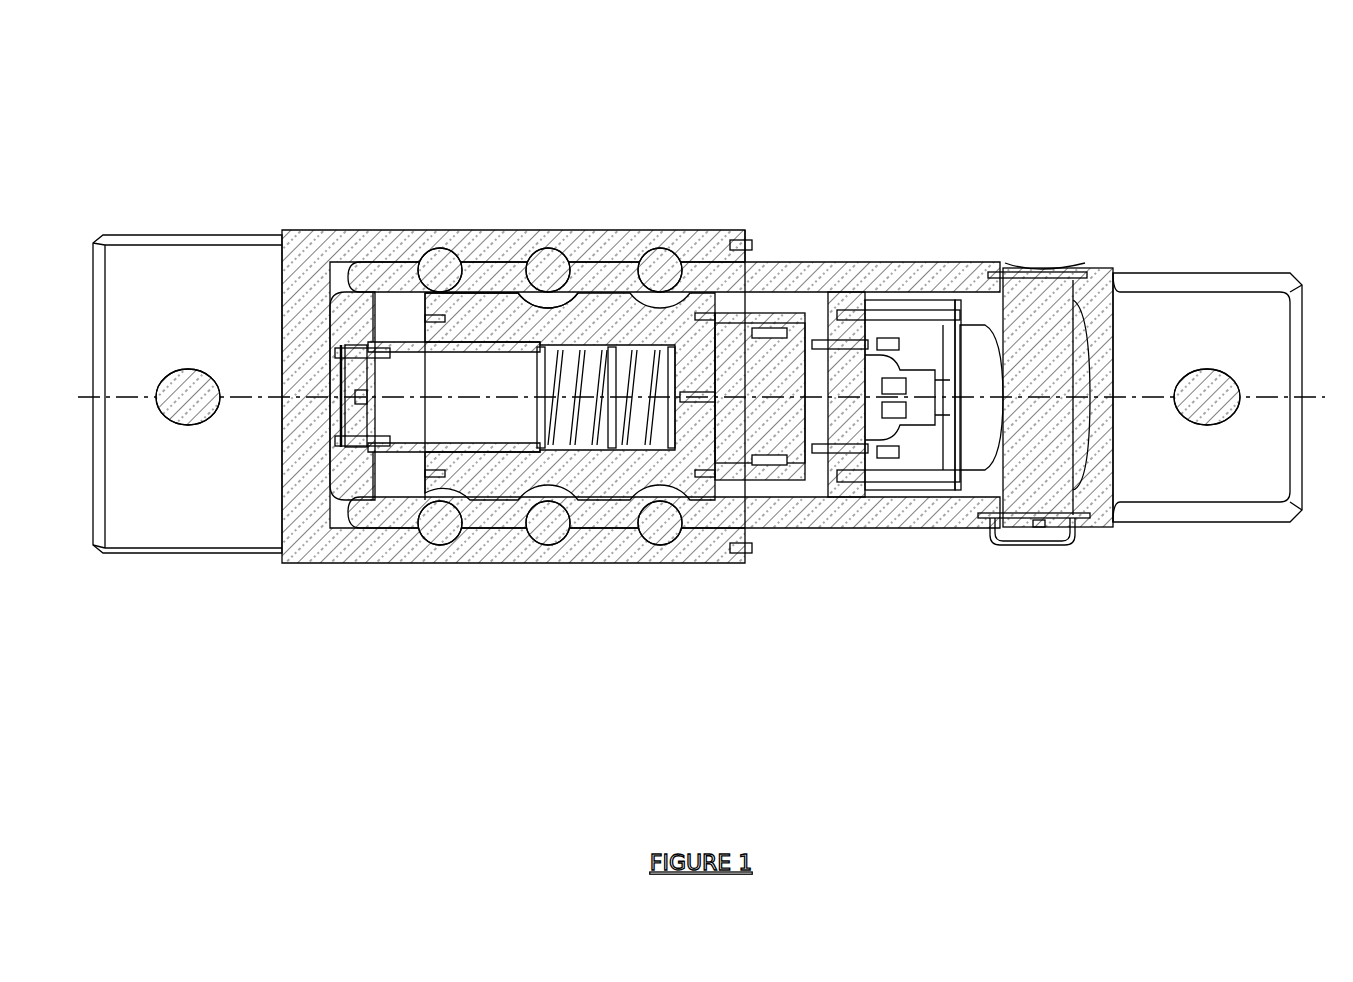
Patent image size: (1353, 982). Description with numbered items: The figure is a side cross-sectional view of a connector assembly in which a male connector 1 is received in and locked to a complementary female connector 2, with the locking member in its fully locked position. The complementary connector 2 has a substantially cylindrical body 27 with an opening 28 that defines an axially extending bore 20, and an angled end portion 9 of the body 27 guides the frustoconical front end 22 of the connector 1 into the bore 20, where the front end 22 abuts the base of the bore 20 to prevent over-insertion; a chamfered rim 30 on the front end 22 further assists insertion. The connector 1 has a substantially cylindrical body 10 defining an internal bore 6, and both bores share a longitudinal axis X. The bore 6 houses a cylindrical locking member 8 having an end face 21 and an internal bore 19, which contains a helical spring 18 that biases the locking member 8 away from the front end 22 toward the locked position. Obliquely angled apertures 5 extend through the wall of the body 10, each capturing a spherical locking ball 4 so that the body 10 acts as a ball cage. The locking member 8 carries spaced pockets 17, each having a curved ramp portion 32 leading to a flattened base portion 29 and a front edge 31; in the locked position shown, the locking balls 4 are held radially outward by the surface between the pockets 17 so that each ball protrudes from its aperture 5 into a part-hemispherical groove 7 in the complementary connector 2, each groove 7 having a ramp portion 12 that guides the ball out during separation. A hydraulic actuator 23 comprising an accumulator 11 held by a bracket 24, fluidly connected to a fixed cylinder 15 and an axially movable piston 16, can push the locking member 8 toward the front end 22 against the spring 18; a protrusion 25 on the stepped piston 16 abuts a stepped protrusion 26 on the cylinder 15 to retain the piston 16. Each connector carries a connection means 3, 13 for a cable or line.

The male connector 1 is at (1150, 240).
The complementary female connector 2 is at (276, 184).
The connection means 3 is at (188, 376).
The locking ball 4 is at (441, 250).
The aperture 5 is at (463, 283).
The internal bore 6 is at (392, 262).
The groove 7 is at (530, 330).
The locking member 8 is at (623, 327).
The end portion 9 is at (758, 262).
The body 10 is at (727, 275).
The accumulator 11 is at (920, 347).
The ramp portion 12 is at (566, 262).
The connection means 13 is at (1222, 385).
The cylinder 15 is at (812, 470).
The piston 16 is at (760, 430).
The pocket 17 is at (595, 497).
The helical spring 18 is at (653, 450).
The internal bore 19 is at (555, 450).
The bore 20 is at (517, 530).
The end face 21 is at (428, 483).
The frustoconical front end 22 is at (342, 487).
The hydraulic actuator 23 is at (942, 494).
The bracket 24 is at (951, 330).
The protrusion 25 is at (800, 455).
The stepped protrusion 26 is at (727, 457).
The body 27 is at (681, 262).
The opening 28 is at (778, 250).
The flattened base portion 29 is at (484, 483).
The chamfered rim 30 is at (353, 273).
The front edge 31 is at (447, 483).
The curved ramp portion 32 is at (460, 487).